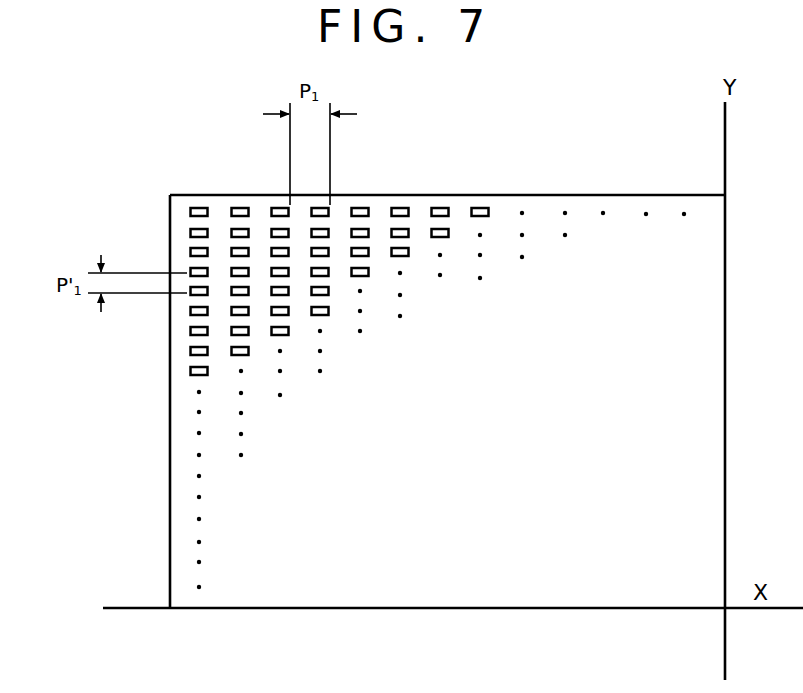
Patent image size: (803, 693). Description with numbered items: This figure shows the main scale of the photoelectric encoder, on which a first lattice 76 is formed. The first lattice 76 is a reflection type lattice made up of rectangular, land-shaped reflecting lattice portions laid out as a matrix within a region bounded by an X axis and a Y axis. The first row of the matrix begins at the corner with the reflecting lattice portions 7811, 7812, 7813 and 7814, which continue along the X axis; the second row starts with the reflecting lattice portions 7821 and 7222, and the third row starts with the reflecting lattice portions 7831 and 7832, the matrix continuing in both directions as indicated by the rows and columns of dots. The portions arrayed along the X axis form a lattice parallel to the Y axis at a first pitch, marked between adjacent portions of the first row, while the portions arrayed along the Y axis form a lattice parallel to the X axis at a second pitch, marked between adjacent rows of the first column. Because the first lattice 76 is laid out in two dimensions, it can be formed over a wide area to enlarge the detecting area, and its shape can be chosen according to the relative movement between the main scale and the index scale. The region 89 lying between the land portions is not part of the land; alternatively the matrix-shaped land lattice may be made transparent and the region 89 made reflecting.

The first lattice 76 is at (166, 175).
The portion which is not a portion of the land 89 is at (453, 200).
The reflecting lattice portion 7811 is at (190, 211).
The reflecting lattice portion 7812 is at (235, 205).
The reflecting lattice portion 7813 is at (277, 205).
The reflecting lattice portion 7814 is at (333, 208).
The reflecting lattice portion 7821 is at (189, 233).
The reflecting lattice portion 7222 is at (230, 235).
The reflecting lattice portion 7831 is at (194, 247).
The reflecting lattice portion 7832 is at (251, 253).